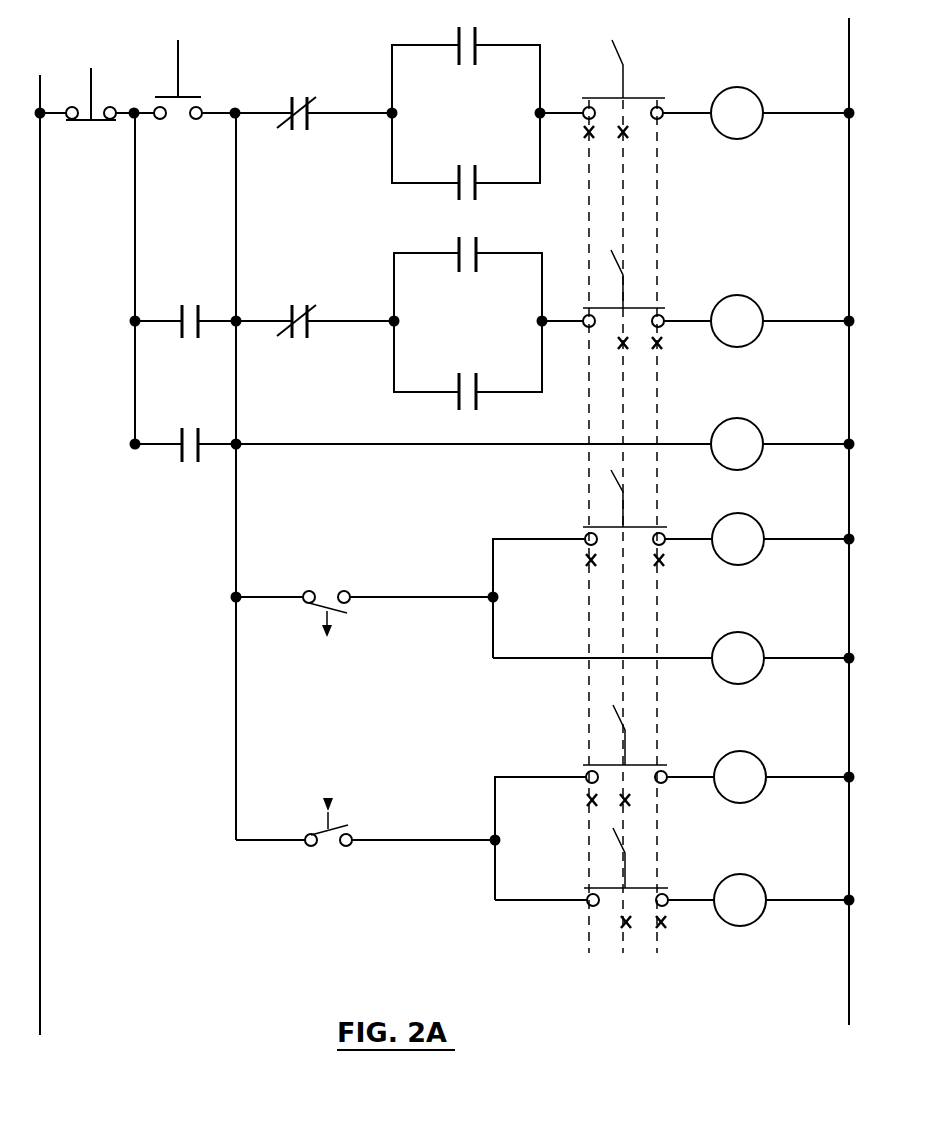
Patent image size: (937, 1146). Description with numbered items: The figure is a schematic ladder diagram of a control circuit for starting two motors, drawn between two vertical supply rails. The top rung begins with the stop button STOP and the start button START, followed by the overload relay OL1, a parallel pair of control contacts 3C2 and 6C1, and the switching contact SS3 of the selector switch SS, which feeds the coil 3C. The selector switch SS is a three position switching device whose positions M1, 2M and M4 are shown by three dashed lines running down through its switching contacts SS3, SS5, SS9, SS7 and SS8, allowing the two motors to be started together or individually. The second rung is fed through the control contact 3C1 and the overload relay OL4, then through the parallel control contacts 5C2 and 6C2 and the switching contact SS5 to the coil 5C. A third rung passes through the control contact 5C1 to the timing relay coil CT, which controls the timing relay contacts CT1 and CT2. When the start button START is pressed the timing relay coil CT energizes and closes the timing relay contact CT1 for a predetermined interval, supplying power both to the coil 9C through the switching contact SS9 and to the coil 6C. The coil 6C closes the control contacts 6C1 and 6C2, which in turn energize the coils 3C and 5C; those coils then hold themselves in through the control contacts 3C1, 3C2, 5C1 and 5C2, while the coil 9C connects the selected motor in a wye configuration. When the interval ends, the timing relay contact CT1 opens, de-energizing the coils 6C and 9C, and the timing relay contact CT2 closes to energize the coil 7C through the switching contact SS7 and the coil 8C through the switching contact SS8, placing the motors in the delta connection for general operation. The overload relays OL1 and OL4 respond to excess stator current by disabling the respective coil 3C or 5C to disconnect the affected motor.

The stop button STOP is at (90, 83).
The start button START is at (175, 65).
The overload relay OL1 is at (299, 98).
The control contact 3C2 is at (485, 35).
The control contact 6C1 is at (485, 166).
The selector switch position M1 is at (587, 511).
The selector switch position 2M is at (640, 511).
The selector switch position M4 is at (675, 511).
The selector switch SS is at (612, 451).
The switching contact SS3 is at (640, 97).
The coil 3C is at (758, 109).
The control contact 3C1 is at (181, 306).
The overload relay OL4 is at (294, 306).
The control contact 5C2 is at (498, 246).
The control contact 6C2 is at (487, 377).
The switching contact SS5 is at (640, 310).
The coil 5C is at (758, 317).
The control contact 5C1 is at (181, 428).
The timing relay coil CT is at (757, 441).
The timing relay contact CT1 is at (327, 596).
The switching contact SS9 is at (640, 530).
The coil 9C is at (759, 536).
The coil 6C is at (759, 655).
The timing relay contact CT2 is at (353, 819).
The switching contact SS7 is at (640, 767).
The coil 7C is at (761, 775).
The switching contact SS8 is at (640, 890).
The coil 8C is at (761, 899).